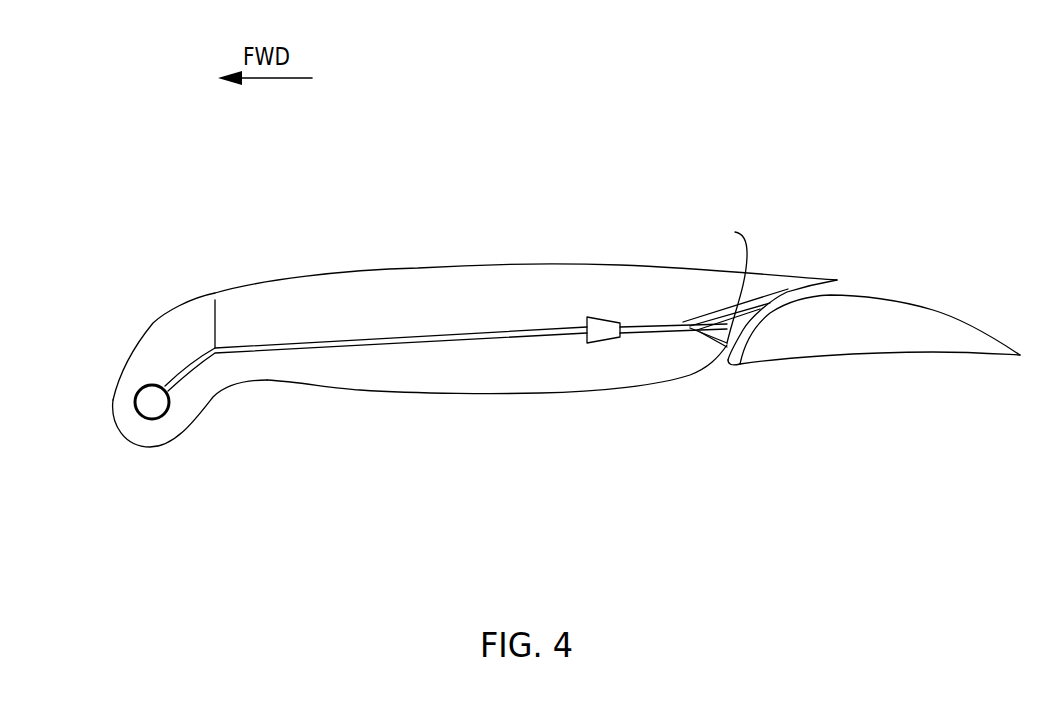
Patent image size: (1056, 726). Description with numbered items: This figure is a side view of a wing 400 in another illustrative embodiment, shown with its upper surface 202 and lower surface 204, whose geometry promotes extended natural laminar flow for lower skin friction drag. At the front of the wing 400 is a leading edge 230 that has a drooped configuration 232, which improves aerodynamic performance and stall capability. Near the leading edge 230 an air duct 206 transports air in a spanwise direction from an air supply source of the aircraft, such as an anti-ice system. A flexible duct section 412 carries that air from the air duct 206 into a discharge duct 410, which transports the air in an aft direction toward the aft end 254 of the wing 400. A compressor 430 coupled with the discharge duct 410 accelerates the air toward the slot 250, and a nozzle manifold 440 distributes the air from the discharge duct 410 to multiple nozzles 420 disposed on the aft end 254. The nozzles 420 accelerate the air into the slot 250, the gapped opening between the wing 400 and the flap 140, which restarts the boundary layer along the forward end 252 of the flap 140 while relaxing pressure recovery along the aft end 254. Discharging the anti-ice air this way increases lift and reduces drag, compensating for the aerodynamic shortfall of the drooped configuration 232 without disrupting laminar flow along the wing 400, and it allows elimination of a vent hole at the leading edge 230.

The wing 400 is at (488, 186).
The upper surface 202 is at (418, 270).
The lower surface 204 is at (568, 382).
The air duct 206 is at (143, 417).
The leading edge 230 is at (128, 306).
The drooped configuration 232 is at (112, 365).
The slot 250 is at (851, 274).
The forward end 252 is at (736, 371).
The aft end 254 is at (782, 281).
The discharge duct 410 is at (353, 340).
The flexible duct section 412 is at (215, 300).
The nozzle 420 is at (727, 343).
The compressor 430 is at (605, 317).
The nozzle manifold 440 is at (676, 312).
The flap 140 is at (933, 293).